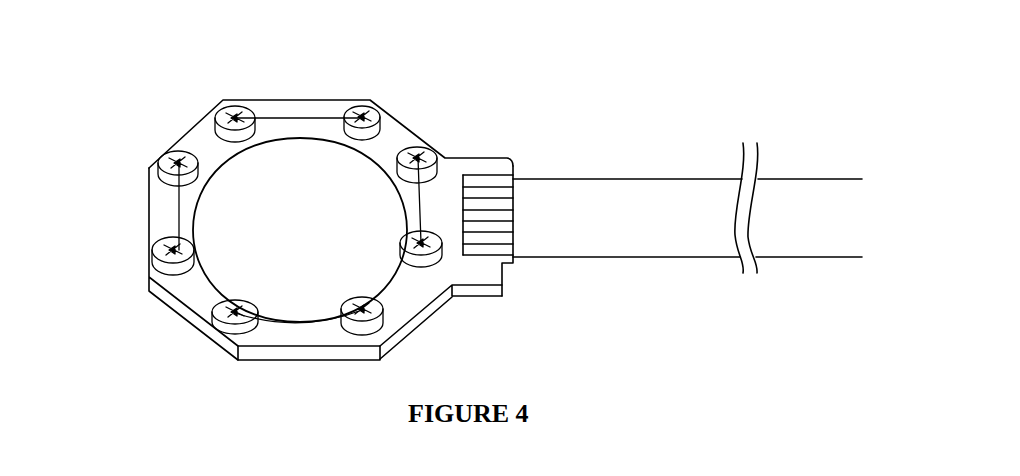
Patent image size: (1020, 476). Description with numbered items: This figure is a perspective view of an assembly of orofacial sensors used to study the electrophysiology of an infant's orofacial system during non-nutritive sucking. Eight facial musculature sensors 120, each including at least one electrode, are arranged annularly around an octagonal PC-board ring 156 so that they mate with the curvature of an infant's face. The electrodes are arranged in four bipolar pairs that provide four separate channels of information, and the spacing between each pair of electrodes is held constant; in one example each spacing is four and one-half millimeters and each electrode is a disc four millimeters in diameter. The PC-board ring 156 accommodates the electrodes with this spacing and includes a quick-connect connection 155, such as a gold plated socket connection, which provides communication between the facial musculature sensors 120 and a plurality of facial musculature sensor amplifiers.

The facial musculature sensor 120 is at (223, 102).
The quick-connect connection 155 is at (521, 214).
The PC-board ring 156 is at (448, 270).